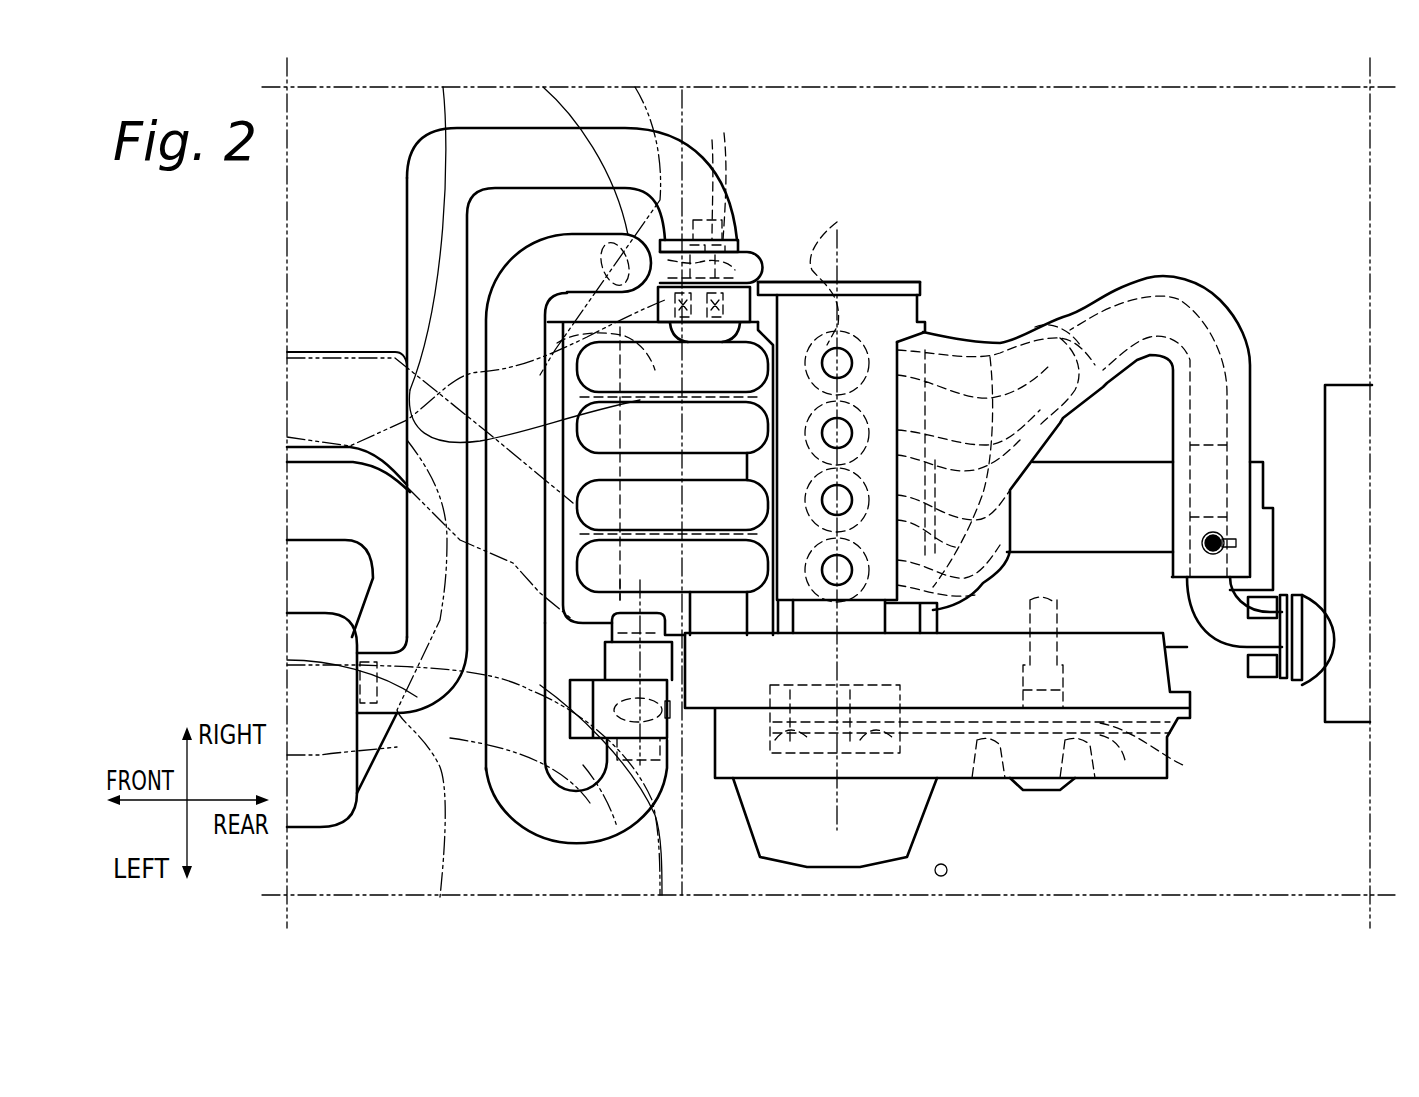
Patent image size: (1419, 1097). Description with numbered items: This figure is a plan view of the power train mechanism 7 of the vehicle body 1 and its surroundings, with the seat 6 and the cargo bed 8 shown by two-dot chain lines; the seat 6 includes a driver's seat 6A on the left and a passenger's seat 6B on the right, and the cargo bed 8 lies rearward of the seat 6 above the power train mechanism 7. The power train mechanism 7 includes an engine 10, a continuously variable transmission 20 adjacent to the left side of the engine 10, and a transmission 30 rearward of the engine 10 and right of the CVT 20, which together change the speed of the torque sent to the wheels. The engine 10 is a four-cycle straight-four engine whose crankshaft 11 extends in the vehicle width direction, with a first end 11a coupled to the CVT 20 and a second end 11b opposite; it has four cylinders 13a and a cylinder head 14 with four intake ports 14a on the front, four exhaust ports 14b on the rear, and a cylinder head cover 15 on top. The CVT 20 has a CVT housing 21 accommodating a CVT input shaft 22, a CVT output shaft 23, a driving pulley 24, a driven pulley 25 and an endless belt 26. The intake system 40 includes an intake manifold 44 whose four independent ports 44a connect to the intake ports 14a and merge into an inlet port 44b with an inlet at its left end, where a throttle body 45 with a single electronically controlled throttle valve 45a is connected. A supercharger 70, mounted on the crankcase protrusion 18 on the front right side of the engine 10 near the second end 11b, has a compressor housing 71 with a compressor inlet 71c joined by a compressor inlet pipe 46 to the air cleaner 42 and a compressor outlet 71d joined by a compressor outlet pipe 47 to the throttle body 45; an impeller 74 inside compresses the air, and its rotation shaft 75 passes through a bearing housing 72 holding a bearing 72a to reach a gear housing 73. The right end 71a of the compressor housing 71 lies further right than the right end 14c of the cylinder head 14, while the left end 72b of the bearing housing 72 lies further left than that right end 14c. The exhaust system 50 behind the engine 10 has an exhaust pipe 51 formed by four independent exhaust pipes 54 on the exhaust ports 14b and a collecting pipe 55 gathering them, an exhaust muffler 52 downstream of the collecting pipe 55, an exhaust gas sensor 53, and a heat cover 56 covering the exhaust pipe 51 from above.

The vehicle body 1 is at (897, 855).
The seat 6 is at (399, 514).
The driver's seat 6A is at (405, 855).
The passenger's seat 6B is at (338, 232).
The power train mechanism 7 is at (268, 435).
The cargo bed 8 is at (682, 843).
The engine 10 is at (918, 232).
The crankshaft 11 is at (937, 687).
The first end 11a is at (853, 607).
The second end 11b is at (833, 270).
The cylinders 13a is at (850, 300).
The cylinder head 14 is at (907, 282).
The intake ports 14a is at (815, 648).
The exhaust ports 14b is at (822, 310).
The right end 14c is at (875, 282).
The cylinder head cover 15 is at (915, 300).
The crankcase protrusion 18 is at (620, 600).
The continuously variable transmission 20 is at (956, 798).
The CVT housing 21 is at (1113, 780).
The CVT input shaft 22 is at (817, 772).
The CVT output shaft 23 is at (1038, 792).
The driving pulley 24 is at (840, 808).
The driven pulley 25 is at (1107, 742).
The endless belt 26 is at (1183, 765).
The transmission 30 is at (1092, 462).
The intake system 40 is at (400, 162).
The air cleaner 42 is at (307, 617).
The intake manifold 44 is at (487, 476).
The independent ports 44a is at (595, 565).
The inlet port 44b is at (575, 503).
The throttle body 45 is at (577, 720).
The throttle valve 45a is at (673, 748).
The compressor inlet pipe 46 is at (405, 322).
The compressor outlet pipe 47 is at (525, 248).
The exhaust system 50 is at (1170, 221).
The exhaust pipe 51 is at (1110, 293).
The exhaust muffler 52 is at (1266, 465).
The exhaust gas sensor 53 is at (1223, 537).
The independent exhaust pipes 54 is at (990, 337).
The collecting pipe 55 is at (1237, 387).
The heat cover 56 is at (1177, 277).
The supercharger 70 is at (750, 222).
The compressor housing 71 is at (697, 240).
The right end 71a is at (738, 235).
The compressor inlet 71c is at (712, 207).
The compressor outlet 71d is at (630, 230).
The bearing housing 72 is at (660, 300).
The bearing 72a is at (752, 310).
The left end 72b is at (722, 335).
The gear housing 73 is at (557, 343).
The impeller 74 is at (727, 183).
The rotation shaft 75 is at (678, 340).